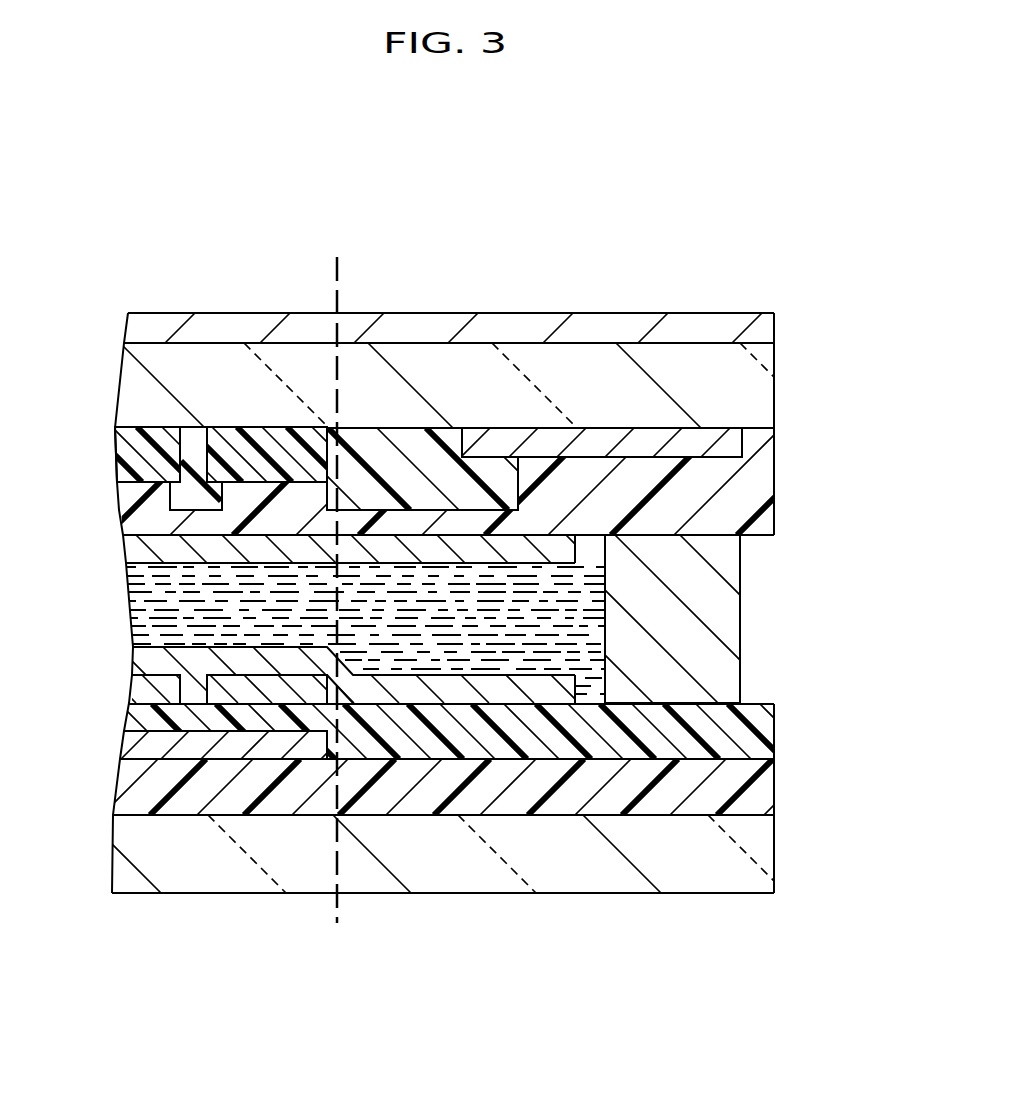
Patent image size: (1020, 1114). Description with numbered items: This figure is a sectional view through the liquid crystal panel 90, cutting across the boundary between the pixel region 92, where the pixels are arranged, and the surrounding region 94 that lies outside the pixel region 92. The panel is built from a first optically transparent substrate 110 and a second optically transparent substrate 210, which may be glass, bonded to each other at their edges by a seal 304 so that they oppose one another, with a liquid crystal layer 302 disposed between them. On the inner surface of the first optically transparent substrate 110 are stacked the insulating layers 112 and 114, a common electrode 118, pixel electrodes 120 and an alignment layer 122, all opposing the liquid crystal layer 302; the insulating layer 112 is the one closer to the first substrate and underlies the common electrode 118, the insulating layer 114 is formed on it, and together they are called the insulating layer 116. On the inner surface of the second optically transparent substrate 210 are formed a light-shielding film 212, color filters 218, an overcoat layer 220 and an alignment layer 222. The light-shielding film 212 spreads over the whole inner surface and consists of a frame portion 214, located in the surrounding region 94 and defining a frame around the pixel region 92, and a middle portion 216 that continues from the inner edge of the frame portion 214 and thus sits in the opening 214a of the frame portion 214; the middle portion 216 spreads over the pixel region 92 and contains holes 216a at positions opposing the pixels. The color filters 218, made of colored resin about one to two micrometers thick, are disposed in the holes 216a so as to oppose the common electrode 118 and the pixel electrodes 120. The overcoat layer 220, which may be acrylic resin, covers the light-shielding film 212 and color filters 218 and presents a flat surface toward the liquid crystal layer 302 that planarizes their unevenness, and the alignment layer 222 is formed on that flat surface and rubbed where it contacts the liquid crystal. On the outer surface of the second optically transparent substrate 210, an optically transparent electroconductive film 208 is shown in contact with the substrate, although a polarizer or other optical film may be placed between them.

The liquid crystal panel 90 is at (216, 183).
The pixel region 92 is at (328, 926).
The surrounding region 94 is at (774, 926).
The first optically transparent substrate 110 is at (762, 848).
The insulating layer 112 is at (762, 797).
The insulating layer 114 is at (762, 728).
The insulating layer 116 is at (868, 813).
The common electrode 118 is at (135, 742).
The pixel electrodes 120 is at (135, 689).
The alignment layer 122 is at (135, 662).
The optically transparent electroconductive film 208 is at (762, 333).
The second optically transparent substrate 210 is at (762, 396).
The light-shielding film 212 is at (360, 208).
The frame portion 214 is at (512, 440).
The opening 214a is at (448, 432).
The middle portion 216 is at (382, 440).
The holes 216a is at (170, 440).
The color filters 218 is at (122, 451).
The overcoat layer 220 is at (762, 474).
The alignment layer 222 is at (130, 550).
The liquid crystal layer 302 is at (135, 605).
The seal 304 is at (728, 622).